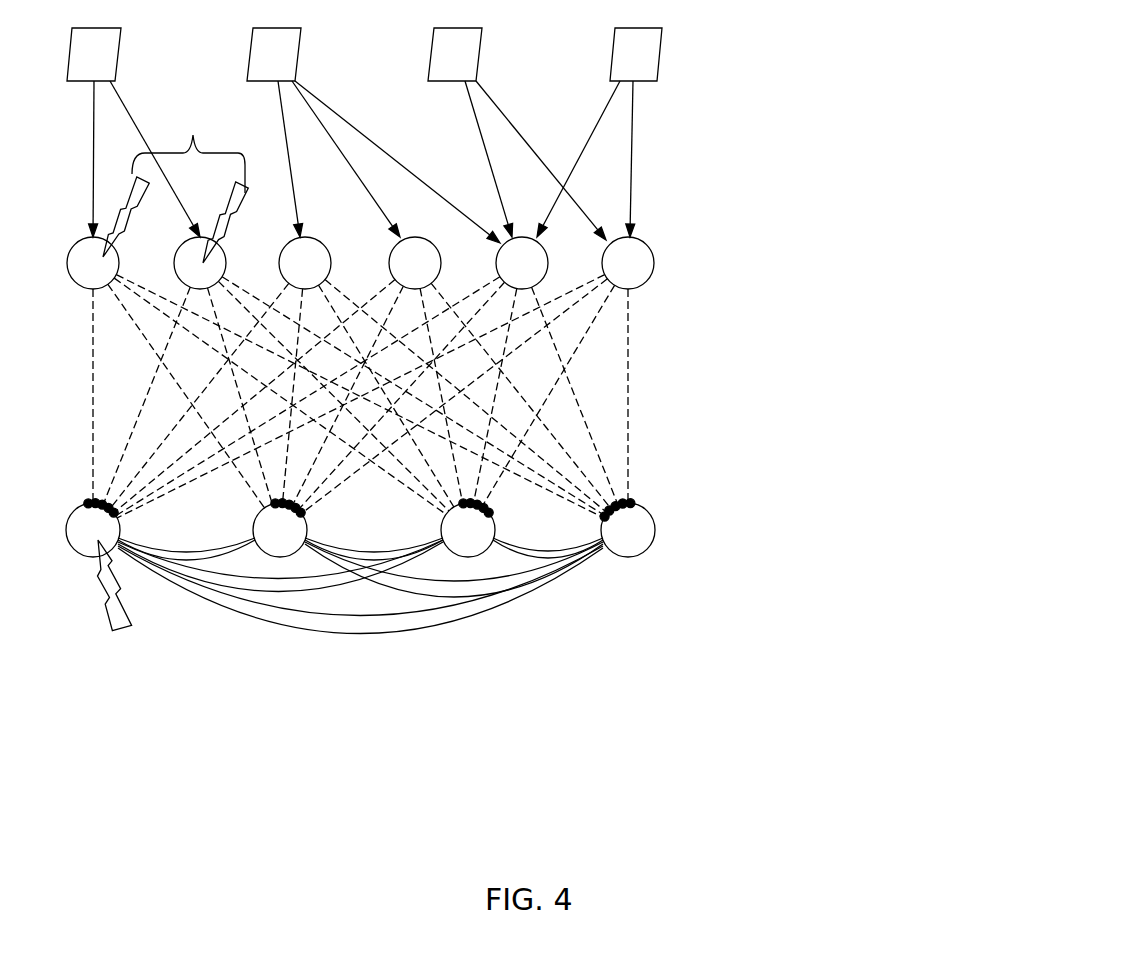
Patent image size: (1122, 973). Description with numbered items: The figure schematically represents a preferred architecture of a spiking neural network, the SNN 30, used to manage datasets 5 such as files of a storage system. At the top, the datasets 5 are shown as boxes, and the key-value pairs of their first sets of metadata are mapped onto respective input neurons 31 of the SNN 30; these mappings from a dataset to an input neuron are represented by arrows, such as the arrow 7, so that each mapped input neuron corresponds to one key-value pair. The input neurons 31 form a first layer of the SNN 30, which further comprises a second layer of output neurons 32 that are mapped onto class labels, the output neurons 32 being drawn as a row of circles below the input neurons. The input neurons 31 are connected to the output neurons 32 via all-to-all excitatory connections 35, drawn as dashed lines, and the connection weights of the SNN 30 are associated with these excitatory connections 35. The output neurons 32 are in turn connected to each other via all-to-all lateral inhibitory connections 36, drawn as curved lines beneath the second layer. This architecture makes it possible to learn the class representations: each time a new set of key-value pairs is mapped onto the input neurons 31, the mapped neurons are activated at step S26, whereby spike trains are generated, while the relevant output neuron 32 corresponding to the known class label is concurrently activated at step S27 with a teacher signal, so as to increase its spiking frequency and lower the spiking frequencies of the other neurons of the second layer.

The datasets 5 is at (482, 47).
The arrow 7 is at (635, 105).
The spiking neural network 30 is at (243, 718).
The input neurons 31 is at (657, 238).
The output neurons 32 is at (640, 558).
The excitatory connections 35 is at (632, 363).
The lateral inhibitory connections 36 is at (423, 632).
The step of activating mapped neurons S26 is at (175, 183).
The step of activating relevant output neuron S27 is at (136, 596).